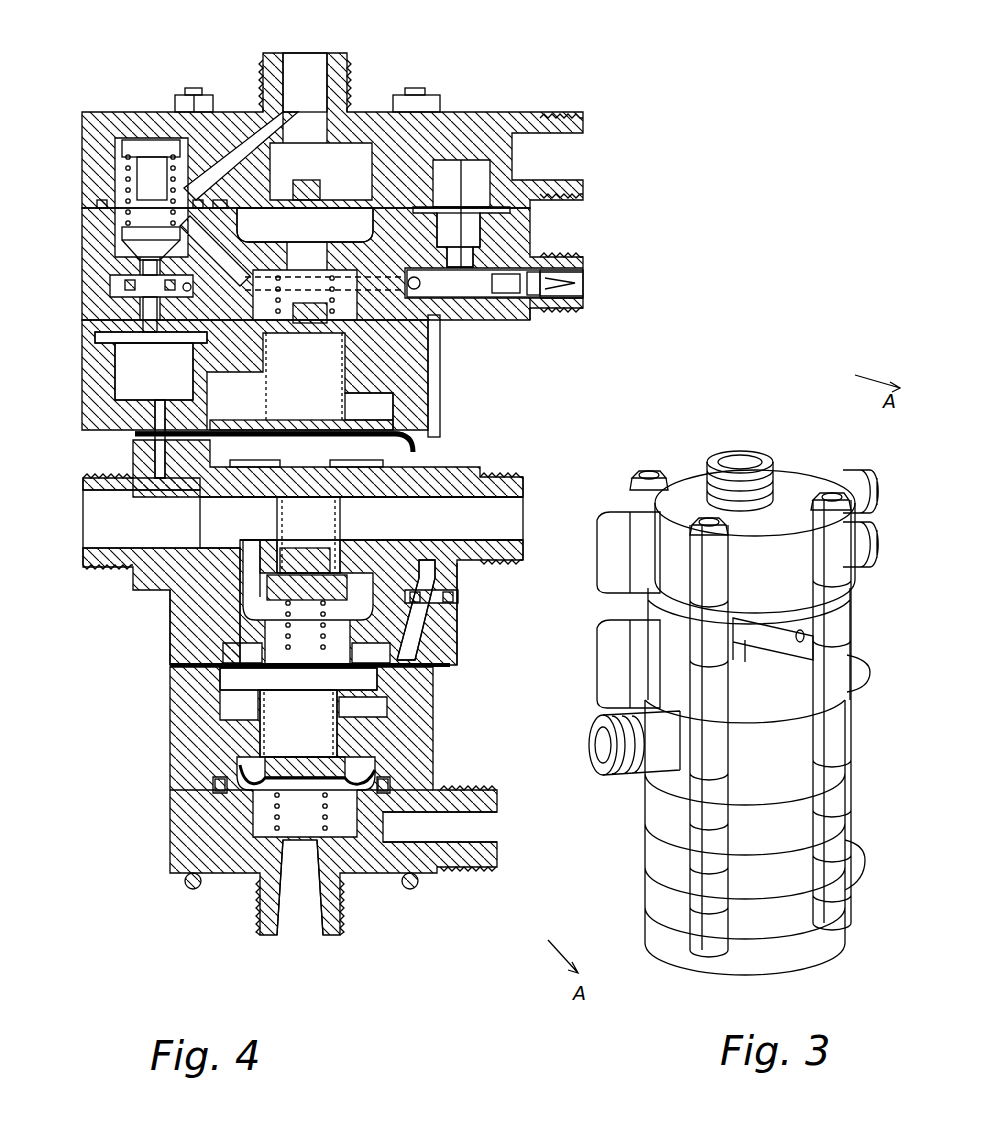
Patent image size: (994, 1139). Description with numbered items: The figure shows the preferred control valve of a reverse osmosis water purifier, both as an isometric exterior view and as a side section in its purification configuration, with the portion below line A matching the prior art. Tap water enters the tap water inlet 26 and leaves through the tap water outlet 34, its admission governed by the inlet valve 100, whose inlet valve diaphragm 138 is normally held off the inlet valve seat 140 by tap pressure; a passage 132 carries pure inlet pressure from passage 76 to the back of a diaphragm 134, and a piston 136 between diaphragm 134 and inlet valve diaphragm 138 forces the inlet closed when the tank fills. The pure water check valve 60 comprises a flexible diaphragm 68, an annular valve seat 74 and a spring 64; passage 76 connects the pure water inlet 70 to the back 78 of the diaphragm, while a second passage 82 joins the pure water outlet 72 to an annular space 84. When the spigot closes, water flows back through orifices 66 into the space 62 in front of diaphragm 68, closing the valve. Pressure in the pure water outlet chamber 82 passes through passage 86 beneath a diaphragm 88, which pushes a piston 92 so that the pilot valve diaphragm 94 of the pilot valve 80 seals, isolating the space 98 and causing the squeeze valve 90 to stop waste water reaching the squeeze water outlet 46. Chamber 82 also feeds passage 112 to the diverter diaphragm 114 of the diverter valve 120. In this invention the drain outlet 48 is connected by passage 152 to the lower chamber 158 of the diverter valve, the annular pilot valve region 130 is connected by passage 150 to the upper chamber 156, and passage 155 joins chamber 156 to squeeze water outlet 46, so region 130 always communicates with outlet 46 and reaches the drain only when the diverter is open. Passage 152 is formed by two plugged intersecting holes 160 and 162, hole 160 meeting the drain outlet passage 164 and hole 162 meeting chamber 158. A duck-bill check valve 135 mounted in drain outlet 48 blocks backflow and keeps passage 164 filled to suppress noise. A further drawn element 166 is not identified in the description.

In FIG. 4, the tap water inlet 26 is at (340, 932).
In FIG. 4, the tap water outlet 34 is at (470, 868).
In FIG. 3, the tap water outlet 34 is at (855, 855).
In FIG. 4, the squeeze water outlet 46 is at (345, 62).
In FIG. 3, the squeeze water outlet 46 is at (710, 462).
In FIG. 4, the drain outlet 48 is at (585, 258).
In FIG. 3, the drain outlet 48 is at (877, 530).
In FIG. 4, the pure water check valve 60 is at (320, 620).
In FIG. 4, the space 62 is at (360, 605).
In FIG. 4, the spring 64 is at (268, 618).
In FIG. 4, the orifices 66 is at (300, 600).
In FIG. 4, the flexible diaphragm 68 is at (307, 586).
In FIG. 4, the pure water inlet 70 is at (512, 476).
In FIG. 3, the pure water inlet 70 is at (865, 690).
In FIG. 4, the pure water outlet 72 is at (95, 566).
In FIG. 3, the pure water outlet 72 is at (605, 780).
In FIG. 4, the annular valve seat 74 is at (355, 580).
In FIG. 4, the passage 76 is at (425, 525).
In FIG. 4, the back of diaphragm 78 is at (305, 548).
In FIG. 4, the pilot valve 80 is at (290, 290).
In FIG. 4, the pure water outlet chamber 82 is at (141, 519).
In FIG. 4, the annular space 84 is at (212, 556).
In FIG. 4, the passage 86 is at (225, 489).
In FIG. 4, the diaphragm 88 is at (425, 458).
In FIG. 4, the squeeze valve 90 is at (352, 197).
In FIG. 4, the piston 92 is at (301, 381).
In FIG. 4, the pilot valve diaphragm 94 is at (540, 312).
In FIG. 4, the space 98 is at (385, 403).
In FIG. 4, the inlet valve 100 is at (257, 792).
In FIG. 4, the passage 112 is at (157, 416).
In FIG. 4, the diverter diaphragm 114 is at (154, 371).
In FIG. 4, the diverter valve 120 is at (122, 246).
In FIG. 4, the annular pilot valve region 130 is at (135, 363).
In FIG. 4, the passage 132 is at (420, 643).
In FIG. 4, the diaphragm 134 is at (225, 680).
In FIG. 4, the check valve 135 is at (583, 272).
In FIG. 4, the piston 136 is at (315, 740).
In FIG. 4, the inlet valve diaphragm 138 is at (295, 760).
In FIG. 4, the inlet valve seat 140 is at (272, 792).
In FIG. 4, the passage 150 is at (148, 270).
In FIG. 4, the passage 152 is at (393, 275).
In FIG. 4, the passage 155 is at (213, 110).
In FIG. 4, the upper chamber 156 is at (128, 170).
In FIG. 4, the lower chamber 158 is at (172, 302).
In FIG. 3, the hole 160 is at (750, 645).
In FIG. 3, the hole 162 is at (815, 625).
In FIG. 4, the drain outlet passage 164 is at (482, 280).
In FIG. 4, the spring 166 is at (323, 305).